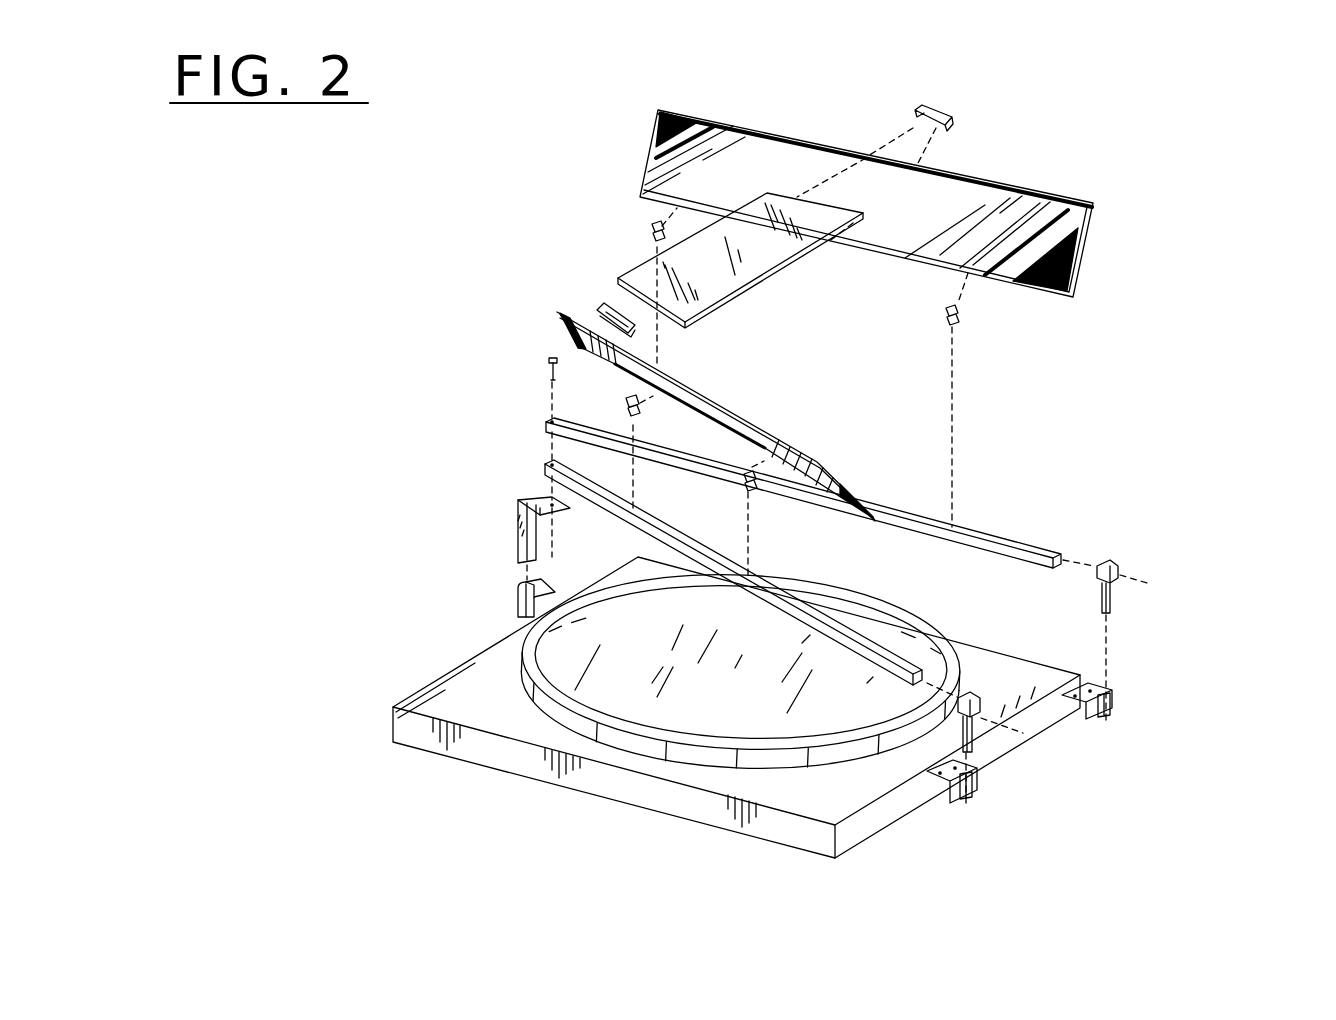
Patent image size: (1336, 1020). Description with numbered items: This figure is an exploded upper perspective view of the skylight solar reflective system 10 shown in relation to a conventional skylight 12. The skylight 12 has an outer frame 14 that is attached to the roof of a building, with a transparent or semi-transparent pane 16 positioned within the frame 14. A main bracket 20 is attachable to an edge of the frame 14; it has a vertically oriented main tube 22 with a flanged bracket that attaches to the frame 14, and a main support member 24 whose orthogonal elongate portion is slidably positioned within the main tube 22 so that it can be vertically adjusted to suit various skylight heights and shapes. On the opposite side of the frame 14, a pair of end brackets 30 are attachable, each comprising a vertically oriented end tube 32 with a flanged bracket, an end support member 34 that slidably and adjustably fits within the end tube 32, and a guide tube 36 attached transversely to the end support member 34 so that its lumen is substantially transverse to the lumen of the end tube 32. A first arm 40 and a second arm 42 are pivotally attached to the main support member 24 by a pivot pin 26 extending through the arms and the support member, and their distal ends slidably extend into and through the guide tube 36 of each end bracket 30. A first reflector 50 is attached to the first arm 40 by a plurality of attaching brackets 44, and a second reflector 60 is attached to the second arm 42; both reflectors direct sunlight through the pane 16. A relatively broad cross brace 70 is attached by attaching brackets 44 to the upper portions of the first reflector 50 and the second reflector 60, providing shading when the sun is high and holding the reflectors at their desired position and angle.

The skylight solar reflective system 10 is at (1183, 149).
The skylight 12 is at (435, 672).
The frame 14 is at (488, 752).
The pane 16 is at (633, 690).
The main bracket 20 is at (508, 585).
The main tube 22 is at (512, 603).
The main support member 24 is at (518, 500).
The pivot pin 26 is at (550, 360).
The end brackets 30 is at (1119, 696).
The end tube 32 is at (1110, 700).
The end support member 34 is at (1112, 600).
The guide tube 36 is at (1117, 566).
The first arm 40 is at (883, 600).
The second arm 42 is at (1015, 540).
The attaching brackets 44 is at (948, 116).
The first reflector 50 is at (797, 447).
The second reflector 60 is at (1090, 242).
The cross brace 70 is at (715, 280).